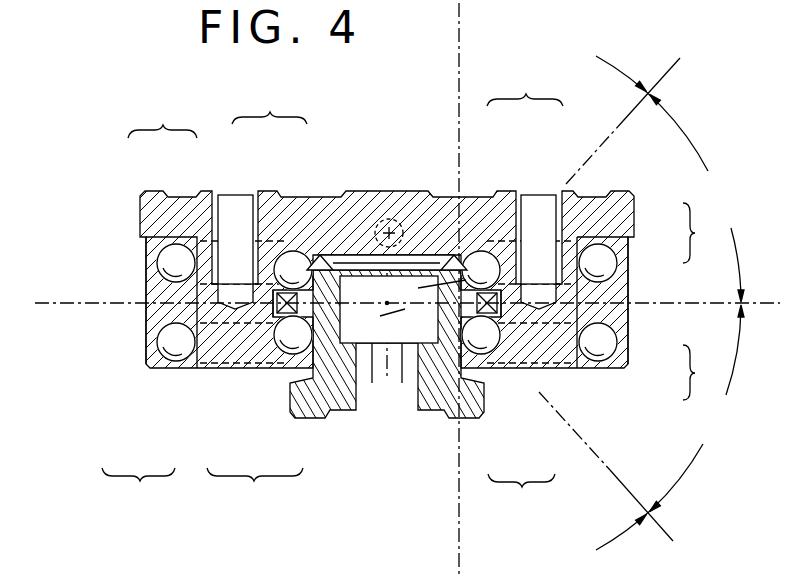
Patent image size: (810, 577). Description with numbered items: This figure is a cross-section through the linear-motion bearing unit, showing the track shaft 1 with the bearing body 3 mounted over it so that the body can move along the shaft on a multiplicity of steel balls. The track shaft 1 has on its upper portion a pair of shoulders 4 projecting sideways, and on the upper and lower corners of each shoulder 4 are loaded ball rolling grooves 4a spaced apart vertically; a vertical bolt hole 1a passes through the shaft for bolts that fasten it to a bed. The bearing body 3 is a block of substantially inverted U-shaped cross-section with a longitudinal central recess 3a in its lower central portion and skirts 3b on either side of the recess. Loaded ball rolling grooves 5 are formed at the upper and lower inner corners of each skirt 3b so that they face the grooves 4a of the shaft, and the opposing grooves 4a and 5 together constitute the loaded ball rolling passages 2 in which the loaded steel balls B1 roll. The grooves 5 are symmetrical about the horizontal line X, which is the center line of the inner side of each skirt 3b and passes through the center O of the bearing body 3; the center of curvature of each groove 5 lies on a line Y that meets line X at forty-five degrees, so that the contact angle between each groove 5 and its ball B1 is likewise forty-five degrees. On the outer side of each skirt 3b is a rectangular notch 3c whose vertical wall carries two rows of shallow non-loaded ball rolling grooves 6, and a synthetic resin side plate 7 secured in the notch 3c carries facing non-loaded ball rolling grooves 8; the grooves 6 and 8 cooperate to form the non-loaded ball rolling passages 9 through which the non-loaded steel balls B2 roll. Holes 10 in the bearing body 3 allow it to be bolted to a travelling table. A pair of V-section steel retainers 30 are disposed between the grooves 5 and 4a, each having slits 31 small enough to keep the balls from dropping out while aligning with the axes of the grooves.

The track shaft 1 is at (325, 429).
The vertical bolt hole 1a is at (417, 392).
The loaded ball rolling passage 2 is at (385, 286).
The bearing body 3 is at (317, 183).
The central recess 3a is at (390, 219).
The skirt 3b is at (150, 310).
The notch 3c is at (150, 287).
The shoulder 4 is at (248, 366).
The loaded ball rolling groove 4a is at (297, 251).
The loaded ball rolling groove 5 is at (279, 253).
The non-loaded ball rolling groove 6 is at (178, 244).
The side plate 7 is at (150, 262).
The non-loaded ball rolling groove 8 is at (167, 246).
The non-loaded ball rolling passage 9 is at (407, 299).
The hole 10 is at (228, 195).
The retainer 30 is at (341, 254).
The slit 31 is at (462, 258).
The loaded steel ball B1 is at (403, 309).
The non-loaded steel ball B2 is at (160, 252).
The center of the bearing body O is at (407, 319).
The horizontal line X is at (42, 303).
The line Y is at (676, 68).